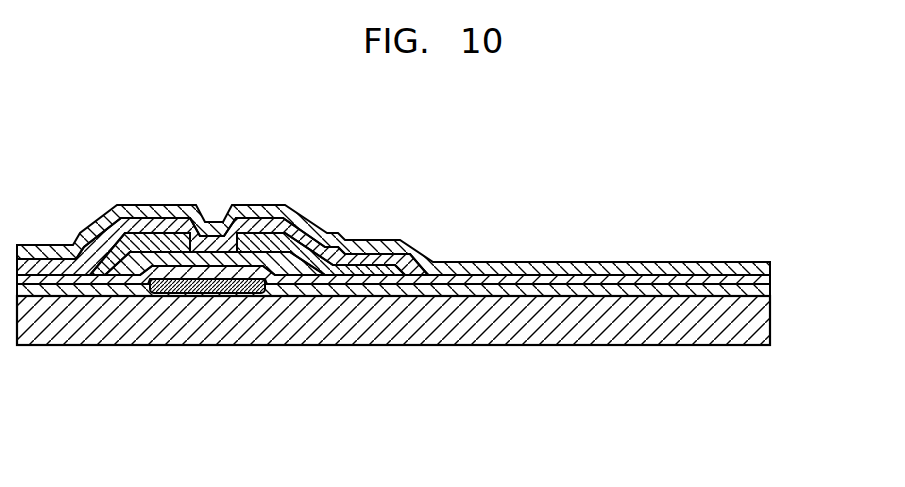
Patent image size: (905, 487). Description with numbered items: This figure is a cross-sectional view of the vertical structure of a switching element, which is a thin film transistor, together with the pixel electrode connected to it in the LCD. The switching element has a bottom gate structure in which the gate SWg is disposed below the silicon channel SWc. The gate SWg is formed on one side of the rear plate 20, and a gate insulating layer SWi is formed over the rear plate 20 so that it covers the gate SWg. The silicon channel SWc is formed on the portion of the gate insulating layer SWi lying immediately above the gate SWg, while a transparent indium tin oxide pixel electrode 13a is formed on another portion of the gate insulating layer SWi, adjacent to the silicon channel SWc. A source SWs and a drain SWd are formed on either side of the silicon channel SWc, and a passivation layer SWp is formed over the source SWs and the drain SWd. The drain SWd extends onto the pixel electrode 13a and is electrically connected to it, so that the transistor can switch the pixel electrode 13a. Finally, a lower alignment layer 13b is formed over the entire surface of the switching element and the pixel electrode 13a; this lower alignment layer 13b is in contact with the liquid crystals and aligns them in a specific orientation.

The rear plate 20 is at (765, 320).
The pixel electrode 13a is at (772, 285).
The lower alignment layer 13b is at (772, 263).
The gate SWg is at (200, 294).
The gate insulating layer SWi is at (367, 286).
The silicon channel SWc is at (290, 277).
The source SWs is at (150, 243).
The drain SWd is at (263, 253).
The passivation layer SWp is at (273, 205).